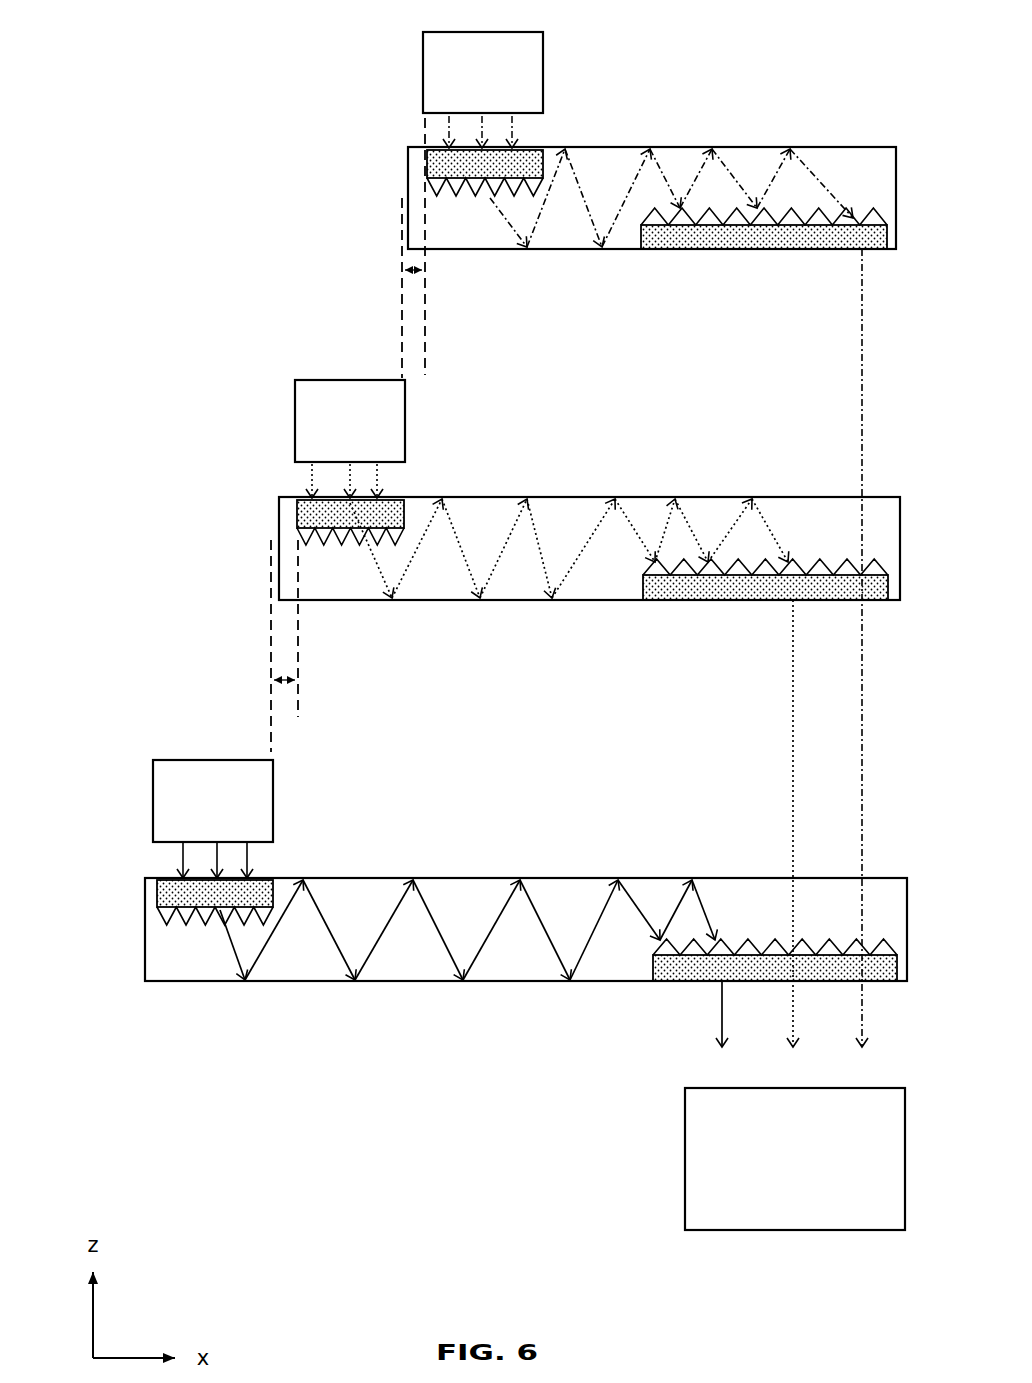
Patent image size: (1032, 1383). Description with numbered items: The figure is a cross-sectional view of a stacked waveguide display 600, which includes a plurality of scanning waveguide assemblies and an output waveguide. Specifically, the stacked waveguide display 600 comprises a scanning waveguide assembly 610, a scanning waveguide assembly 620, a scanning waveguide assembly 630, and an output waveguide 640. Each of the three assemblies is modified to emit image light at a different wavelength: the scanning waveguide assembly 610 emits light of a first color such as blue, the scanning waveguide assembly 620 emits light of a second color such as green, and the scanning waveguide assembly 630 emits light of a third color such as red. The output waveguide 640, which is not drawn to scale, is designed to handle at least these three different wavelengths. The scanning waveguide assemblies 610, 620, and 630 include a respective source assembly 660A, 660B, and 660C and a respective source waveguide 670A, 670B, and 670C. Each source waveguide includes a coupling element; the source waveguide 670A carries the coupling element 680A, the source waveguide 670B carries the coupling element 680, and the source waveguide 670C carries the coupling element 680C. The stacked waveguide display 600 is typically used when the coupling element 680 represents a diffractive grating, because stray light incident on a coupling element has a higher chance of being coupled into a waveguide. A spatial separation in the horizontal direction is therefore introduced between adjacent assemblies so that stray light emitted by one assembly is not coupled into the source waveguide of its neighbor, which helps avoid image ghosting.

The stacked waveguide display 600 is at (48, 29).
The scanning waveguide assembly 610 is at (313, 305).
The scanning waveguide assembly 620 is at (333, 345).
The scanning waveguide assembly 630 is at (227, 719).
The output waveguide 640 is at (777, 1193).
The source assembly 660A is at (543, 64).
The source assembly 660B is at (372, 405).
The source assembly 660C is at (273, 802).
The source waveguide 670A is at (407, 182).
The source waveguide 670B is at (790, 497).
The source waveguide 670C is at (421, 985).
The coupling element 680A is at (423, 157).
The coupling element 680 is at (318, 513).
The coupling element 680C is at (252, 908).